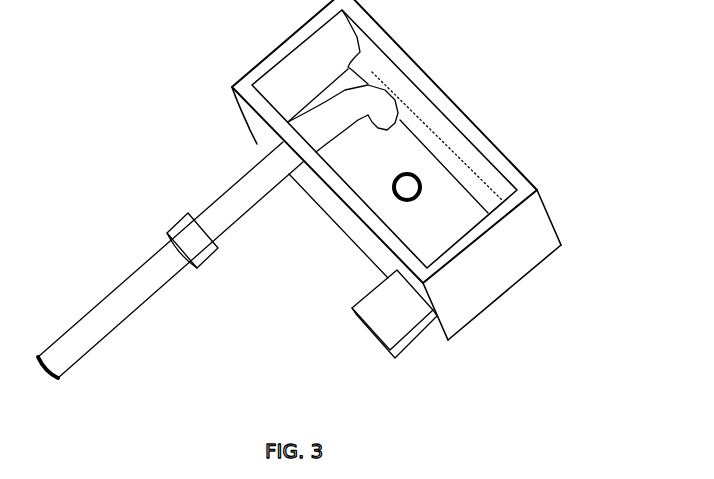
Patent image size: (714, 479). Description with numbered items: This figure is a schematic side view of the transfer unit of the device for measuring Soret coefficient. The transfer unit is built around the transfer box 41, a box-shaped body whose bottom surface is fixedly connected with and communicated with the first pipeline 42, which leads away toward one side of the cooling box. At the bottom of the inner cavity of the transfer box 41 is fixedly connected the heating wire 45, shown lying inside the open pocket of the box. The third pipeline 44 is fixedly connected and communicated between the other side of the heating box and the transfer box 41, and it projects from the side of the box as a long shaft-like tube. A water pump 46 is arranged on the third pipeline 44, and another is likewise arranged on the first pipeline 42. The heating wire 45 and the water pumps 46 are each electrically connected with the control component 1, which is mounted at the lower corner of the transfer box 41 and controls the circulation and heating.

The control component 1 is at (368, 317).
The transfer box 41 is at (419, 170).
The first pipeline 42 is at (353, 214).
The third pipeline 44 is at (170, 260).
The heating wire 45 is at (403, 81).
The water pump 46 is at (170, 229).